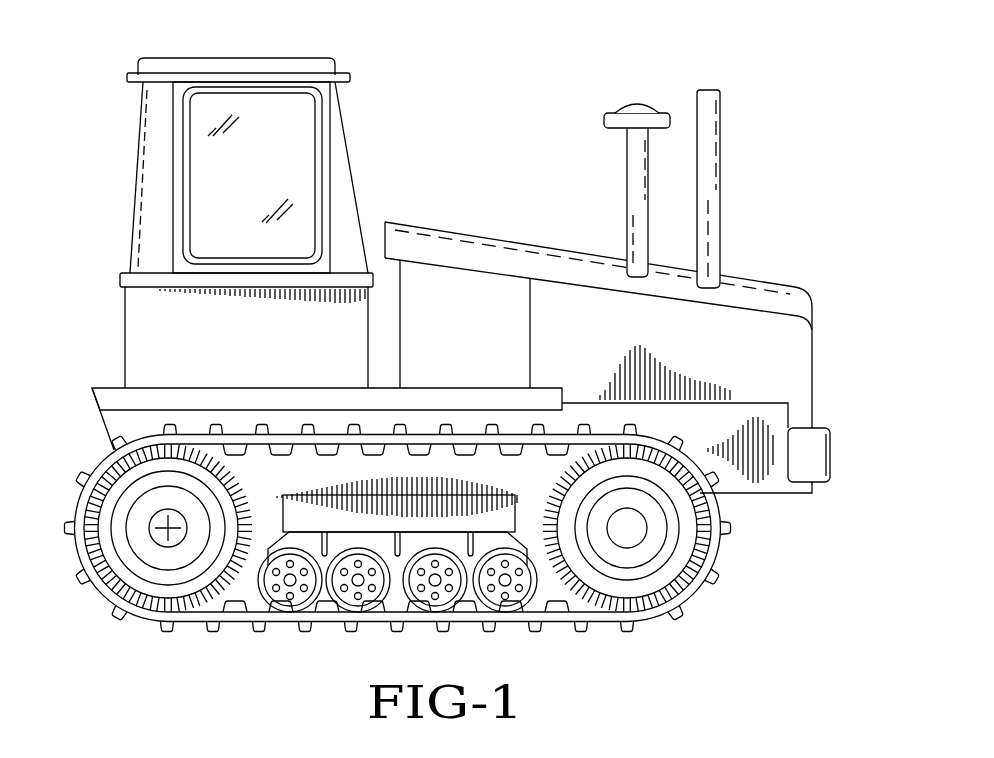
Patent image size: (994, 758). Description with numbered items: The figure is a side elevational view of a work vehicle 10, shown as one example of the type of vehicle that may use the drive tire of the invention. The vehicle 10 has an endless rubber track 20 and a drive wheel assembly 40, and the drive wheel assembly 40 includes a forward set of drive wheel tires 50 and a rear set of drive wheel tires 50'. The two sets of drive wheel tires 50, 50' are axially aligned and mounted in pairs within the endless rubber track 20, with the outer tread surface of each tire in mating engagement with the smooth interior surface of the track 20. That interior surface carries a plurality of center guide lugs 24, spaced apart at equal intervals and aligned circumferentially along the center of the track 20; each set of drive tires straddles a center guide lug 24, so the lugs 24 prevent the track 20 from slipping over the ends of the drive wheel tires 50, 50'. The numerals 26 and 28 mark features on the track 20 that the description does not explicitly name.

The vehicle 10 is at (766, 244).
The endless rubber track 20 is at (686, 631).
The center guide lugs 24 is at (513, 453).
The grousers 26 is at (705, 589).
The track shoe 28 is at (303, 632).
The drive wheel assembly 40 is at (150, 606).
The forward set of drive wheel tires 50 is at (128, 533).
The rear set of drive wheel tires 50' is at (703, 528).